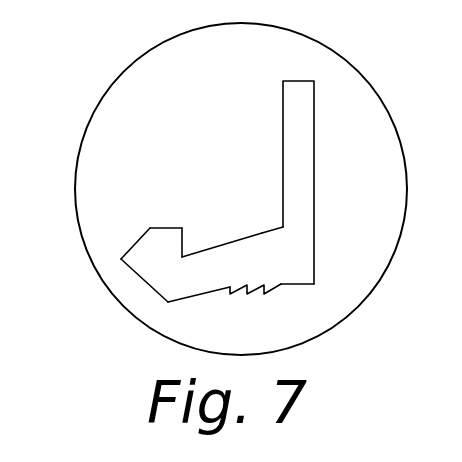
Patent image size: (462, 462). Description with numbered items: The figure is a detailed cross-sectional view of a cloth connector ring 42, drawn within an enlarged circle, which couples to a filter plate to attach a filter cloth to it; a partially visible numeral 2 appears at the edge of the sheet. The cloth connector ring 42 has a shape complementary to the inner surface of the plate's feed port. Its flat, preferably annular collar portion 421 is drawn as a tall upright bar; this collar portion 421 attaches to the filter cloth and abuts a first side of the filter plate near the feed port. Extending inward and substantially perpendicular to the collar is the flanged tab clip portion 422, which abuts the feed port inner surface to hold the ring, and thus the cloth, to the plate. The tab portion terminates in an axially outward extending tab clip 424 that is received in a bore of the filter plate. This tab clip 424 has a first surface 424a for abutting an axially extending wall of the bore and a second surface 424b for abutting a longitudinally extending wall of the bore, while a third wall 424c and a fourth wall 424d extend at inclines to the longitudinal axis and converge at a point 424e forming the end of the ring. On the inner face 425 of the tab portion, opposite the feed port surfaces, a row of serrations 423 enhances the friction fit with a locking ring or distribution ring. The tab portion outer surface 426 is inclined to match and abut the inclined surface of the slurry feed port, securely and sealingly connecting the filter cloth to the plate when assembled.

The fixation device 2 is at (5, 290).
The cloth connector ring 42 is at (207, 132).
The collar portion 421 is at (308, 145).
The flanged tab clip portion 422 is at (227, 258).
The serrations 423 is at (263, 298).
The tab clip 424 is at (118, 255).
The first surface 424a is at (184, 237).
The second surface 424b is at (160, 228).
The third wall 424c is at (132, 249).
The fourth wall 424d is at (157, 262).
The point 424e is at (121, 259).
The inner face 425 is at (198, 293).
The tab portion outer surface 426 is at (262, 233).